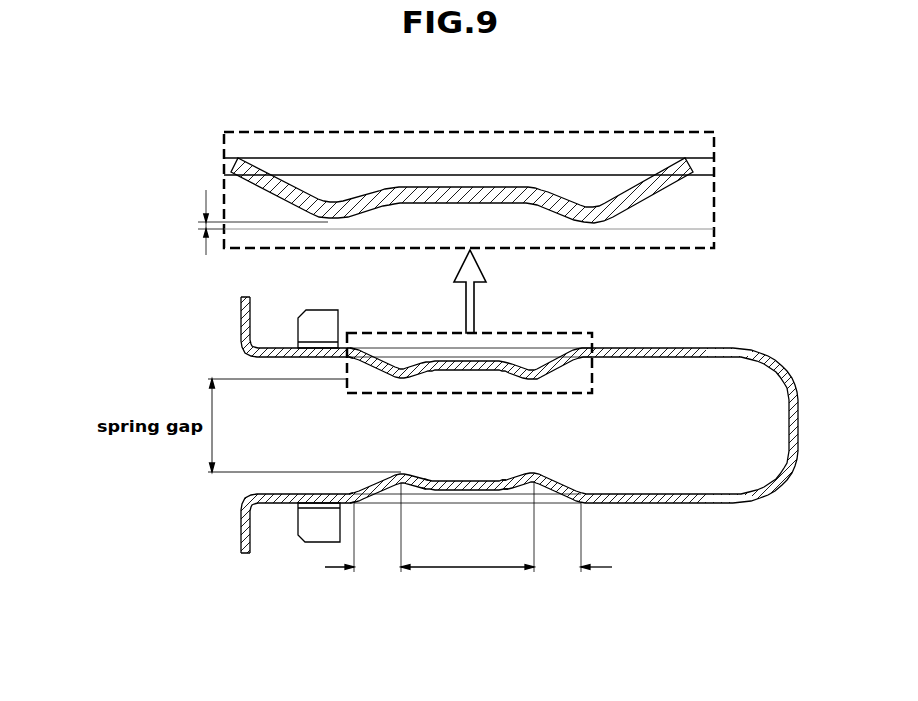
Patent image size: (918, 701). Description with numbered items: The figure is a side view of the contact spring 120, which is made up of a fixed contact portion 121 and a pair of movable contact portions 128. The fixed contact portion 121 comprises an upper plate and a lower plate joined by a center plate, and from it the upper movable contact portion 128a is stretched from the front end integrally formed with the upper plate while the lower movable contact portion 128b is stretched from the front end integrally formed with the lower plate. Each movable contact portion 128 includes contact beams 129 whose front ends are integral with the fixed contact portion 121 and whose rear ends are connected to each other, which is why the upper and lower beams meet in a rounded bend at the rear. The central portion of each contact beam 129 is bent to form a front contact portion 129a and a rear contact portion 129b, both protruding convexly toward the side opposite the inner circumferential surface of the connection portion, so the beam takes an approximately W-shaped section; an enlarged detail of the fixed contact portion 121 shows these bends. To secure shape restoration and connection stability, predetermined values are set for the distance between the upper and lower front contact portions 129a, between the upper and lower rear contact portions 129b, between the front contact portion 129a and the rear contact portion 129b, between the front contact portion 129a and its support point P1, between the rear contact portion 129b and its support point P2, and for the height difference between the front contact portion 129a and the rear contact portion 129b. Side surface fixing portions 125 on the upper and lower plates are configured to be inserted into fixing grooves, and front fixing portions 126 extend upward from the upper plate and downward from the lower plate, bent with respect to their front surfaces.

The contact spring 120 is at (207, 353).
The fixed contact portion 121 is at (533, 343).
The side surface fixing portion 125 is at (308, 527).
The front fixing portion 126 is at (243, 533).
The movable contact portion 128 is at (697, 168).
The upper movable contact portion 128a is at (655, 347).
The lower movable contact portion 128b is at (690, 507).
The contact beam 129 is at (607, 496).
The front contact portion 129a is at (405, 474).
The rear contact portion 129b is at (538, 474).
The support point of the front contact portion P1 is at (354, 500).
The support point of the rear contact portion P2 is at (584, 504).